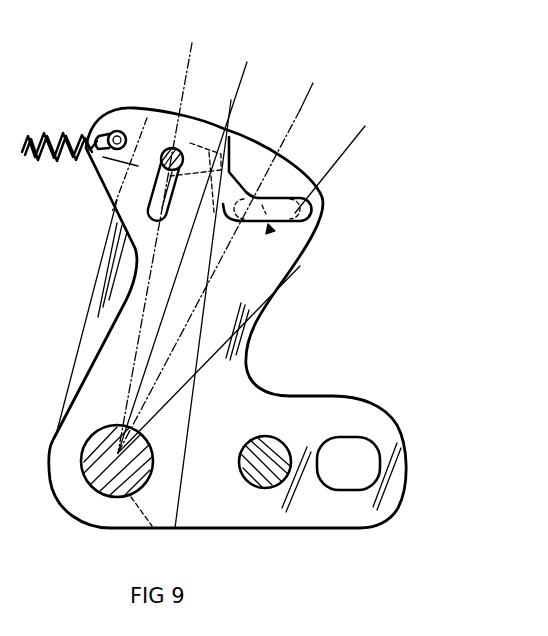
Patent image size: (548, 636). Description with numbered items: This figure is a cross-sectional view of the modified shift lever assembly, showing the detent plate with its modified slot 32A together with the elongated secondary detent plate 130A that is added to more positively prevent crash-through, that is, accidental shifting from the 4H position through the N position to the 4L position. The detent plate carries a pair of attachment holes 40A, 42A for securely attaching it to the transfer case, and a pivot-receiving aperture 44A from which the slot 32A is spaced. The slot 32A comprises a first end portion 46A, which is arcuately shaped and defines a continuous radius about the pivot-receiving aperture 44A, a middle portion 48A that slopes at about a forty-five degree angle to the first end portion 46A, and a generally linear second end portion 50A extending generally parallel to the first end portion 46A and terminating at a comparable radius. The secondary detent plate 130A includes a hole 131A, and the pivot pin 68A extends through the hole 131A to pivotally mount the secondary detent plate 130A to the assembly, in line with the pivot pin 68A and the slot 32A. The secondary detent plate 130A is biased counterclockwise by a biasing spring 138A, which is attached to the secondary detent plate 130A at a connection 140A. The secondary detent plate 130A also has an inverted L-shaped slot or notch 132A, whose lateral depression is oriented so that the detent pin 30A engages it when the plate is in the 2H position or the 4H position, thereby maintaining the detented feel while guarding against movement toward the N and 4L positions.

The secondary detent plate 130A is at (92, 352).
The hole 131A is at (118, 497).
The biasing spring 138A is at (47, 136).
The connection 140A is at (117, 130).
The detent pin 30A is at (170, 147).
The inverted L-shaped slot or notch 132A is at (152, 190).
The middle portion 48A is at (241, 190).
The second end portion 50A is at (278, 192).
The modified slot 32A is at (231, 338).
The pivot pin 68A is at (90, 466).
The pivot-receiving aperture 44A is at (138, 500).
The attachment hole 40A is at (253, 438).
The attachment hole 42A is at (330, 440).
The 2H position 2H is at (163, 239).
The first end portion 46A is at (204, 304).
The 4H position 4H is at (193, 247).
The N position N is at (221, 259).
The 4L position 4L is at (337, 157).